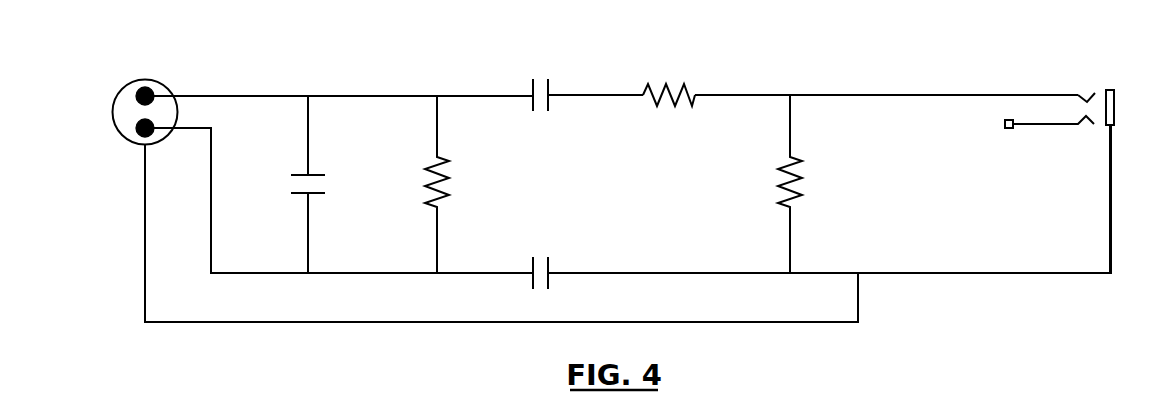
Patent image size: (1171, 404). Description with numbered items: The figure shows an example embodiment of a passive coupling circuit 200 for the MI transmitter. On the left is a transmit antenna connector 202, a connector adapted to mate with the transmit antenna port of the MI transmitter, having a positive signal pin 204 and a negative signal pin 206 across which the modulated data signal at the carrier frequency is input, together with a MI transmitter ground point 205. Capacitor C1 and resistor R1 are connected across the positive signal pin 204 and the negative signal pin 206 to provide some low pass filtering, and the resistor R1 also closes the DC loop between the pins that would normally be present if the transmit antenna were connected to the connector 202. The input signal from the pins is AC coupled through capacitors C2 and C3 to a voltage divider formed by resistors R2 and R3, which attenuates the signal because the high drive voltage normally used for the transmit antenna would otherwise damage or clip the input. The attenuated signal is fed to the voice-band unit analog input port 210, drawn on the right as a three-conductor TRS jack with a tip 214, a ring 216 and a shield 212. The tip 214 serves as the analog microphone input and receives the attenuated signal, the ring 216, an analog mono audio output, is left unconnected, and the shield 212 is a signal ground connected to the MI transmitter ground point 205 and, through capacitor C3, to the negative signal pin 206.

The passive coupling circuit 200 is at (50, 239).
The transmit antenna connector 202 is at (170, 62).
The positive signal pin 204 is at (137, 89).
The MI transmitter ground point 205 is at (145, 250).
The negative signal pin 206 is at (136, 135).
The voice-band unit analog input port 210 is at (1098, 50).
The shield 212 is at (1116, 103).
The tip 214 is at (1071, 91).
The ring 216 is at (1047, 126).
The capacitor C1 is at (327, 184).
The capacitor C2 is at (544, 82).
The capacitor C3 is at (544, 259).
The resistor R1 is at (454, 184).
The resistor R2 is at (669, 81).
The resistor R3 is at (780, 184).